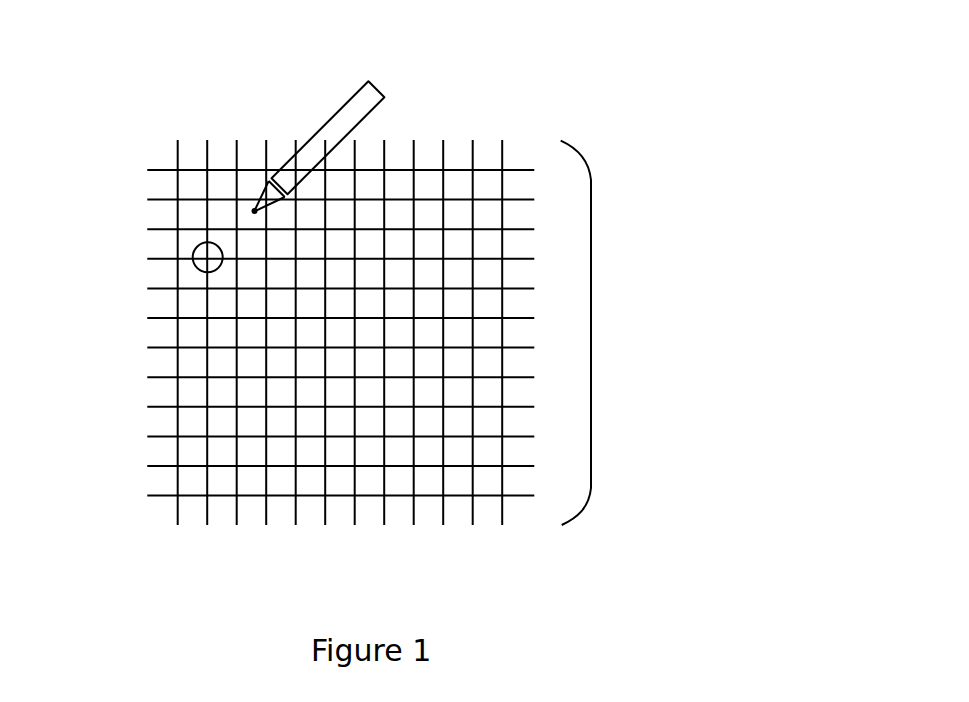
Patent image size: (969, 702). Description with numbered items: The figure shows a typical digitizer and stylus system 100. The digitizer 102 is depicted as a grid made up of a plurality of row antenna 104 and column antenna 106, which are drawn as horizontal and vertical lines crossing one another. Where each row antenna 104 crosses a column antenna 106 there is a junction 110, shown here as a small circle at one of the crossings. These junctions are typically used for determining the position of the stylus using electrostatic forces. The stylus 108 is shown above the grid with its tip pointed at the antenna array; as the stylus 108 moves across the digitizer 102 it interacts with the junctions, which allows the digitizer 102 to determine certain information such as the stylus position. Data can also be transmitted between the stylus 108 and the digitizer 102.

The digitizer and stylus system 100 is at (559, 97).
The digitizer 102 is at (591, 332).
The row antenna 104 is at (147, 258).
The column antenna 106 is at (207, 524).
The stylus 108 is at (333, 112).
The junction 110 is at (198, 268).